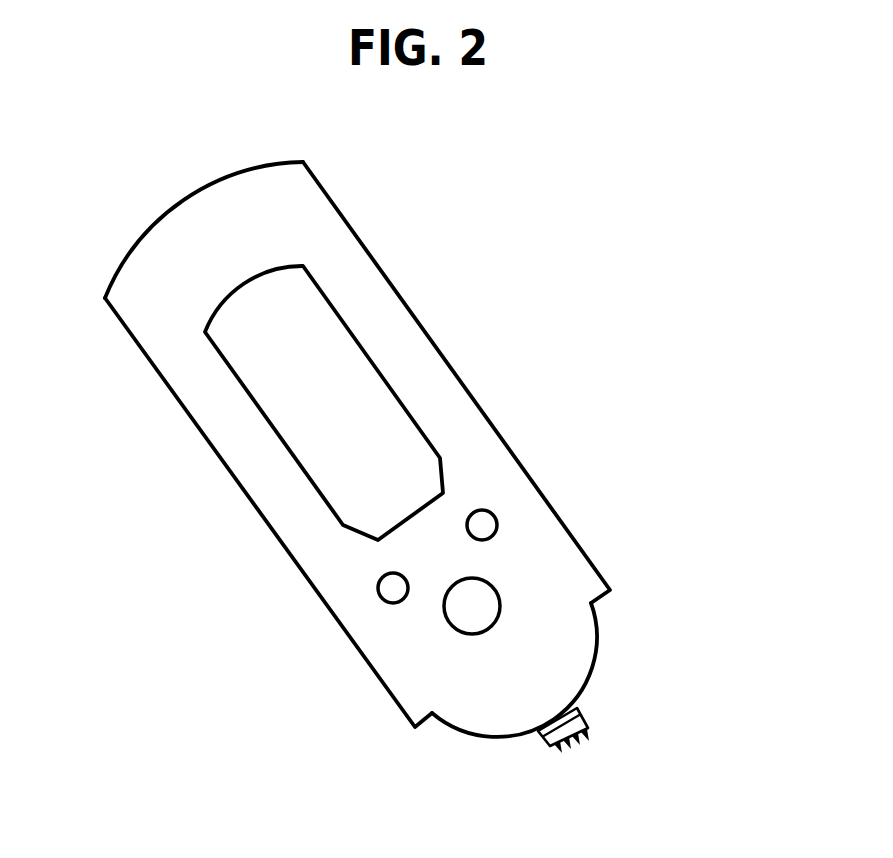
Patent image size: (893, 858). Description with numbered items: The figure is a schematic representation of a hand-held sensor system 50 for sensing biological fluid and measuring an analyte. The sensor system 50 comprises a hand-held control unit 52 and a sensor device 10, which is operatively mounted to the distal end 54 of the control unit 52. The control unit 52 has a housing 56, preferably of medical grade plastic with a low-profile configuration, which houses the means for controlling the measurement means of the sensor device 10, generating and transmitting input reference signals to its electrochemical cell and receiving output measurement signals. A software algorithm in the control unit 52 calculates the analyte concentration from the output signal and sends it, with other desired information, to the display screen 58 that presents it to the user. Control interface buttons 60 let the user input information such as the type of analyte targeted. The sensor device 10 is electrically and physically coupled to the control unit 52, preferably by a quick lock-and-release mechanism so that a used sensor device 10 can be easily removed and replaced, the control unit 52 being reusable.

The sensor device 10 is at (590, 748).
The sensor system 50 is at (408, 439).
The hand-held control unit 52 is at (548, 544).
The distal end 54 is at (563, 668).
The housing 56 is at (352, 227).
The display screen 58 is at (282, 362).
The control interface buttons 60 is at (392, 588).